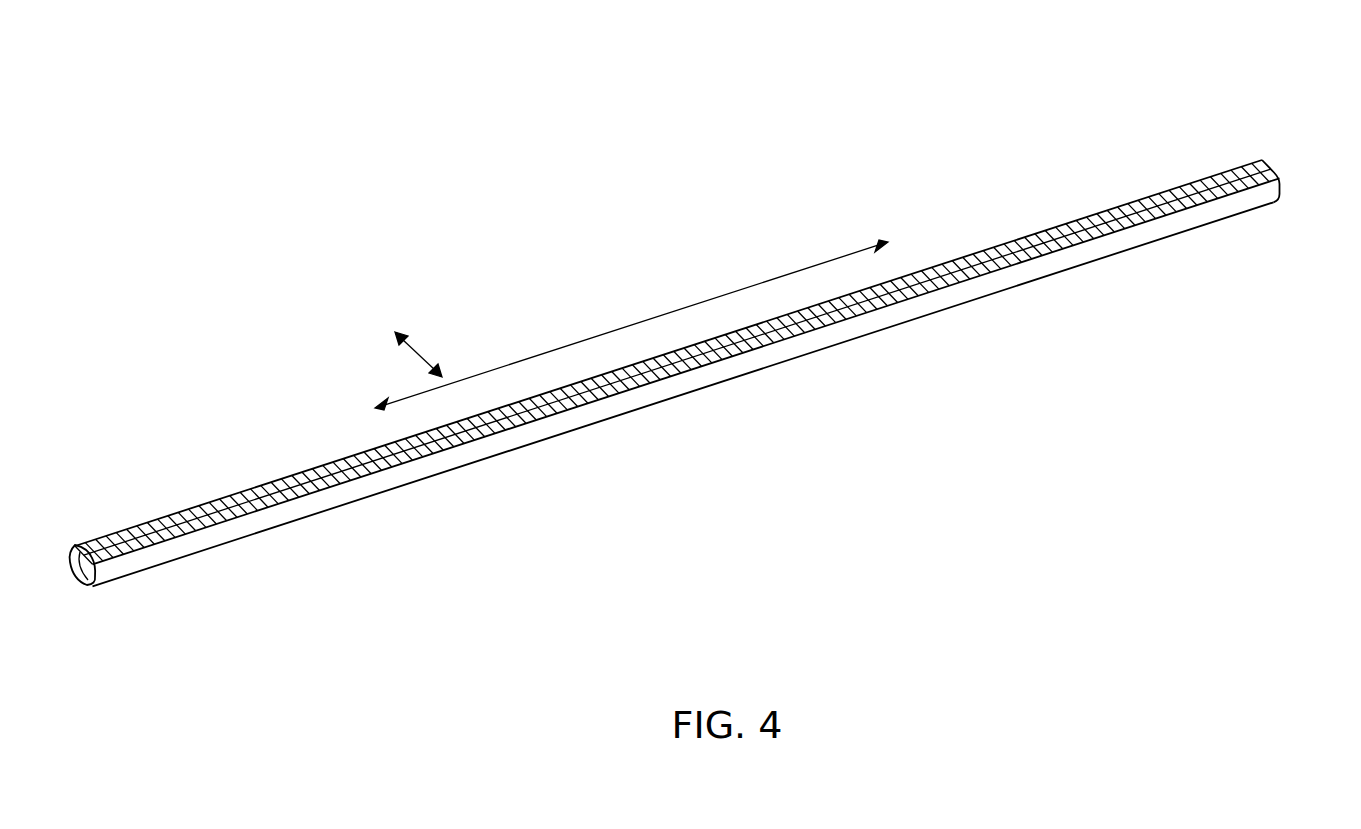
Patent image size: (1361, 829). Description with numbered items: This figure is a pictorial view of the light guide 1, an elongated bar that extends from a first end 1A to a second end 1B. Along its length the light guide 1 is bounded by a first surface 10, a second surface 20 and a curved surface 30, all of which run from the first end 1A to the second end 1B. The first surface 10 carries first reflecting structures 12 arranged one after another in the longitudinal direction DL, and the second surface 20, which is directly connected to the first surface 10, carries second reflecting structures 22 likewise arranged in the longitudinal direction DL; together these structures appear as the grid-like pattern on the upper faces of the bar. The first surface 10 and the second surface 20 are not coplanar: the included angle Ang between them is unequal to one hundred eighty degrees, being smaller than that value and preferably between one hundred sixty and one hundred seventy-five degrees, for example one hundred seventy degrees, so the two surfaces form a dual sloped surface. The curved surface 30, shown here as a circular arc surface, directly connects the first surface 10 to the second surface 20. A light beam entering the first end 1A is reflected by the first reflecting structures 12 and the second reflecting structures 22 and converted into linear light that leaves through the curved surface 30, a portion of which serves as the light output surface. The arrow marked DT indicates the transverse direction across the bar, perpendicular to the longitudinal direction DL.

The light guide 1 is at (708, 400).
The first surface 10 is at (117, 548).
The first reflecting structures 12 is at (251, 500).
The second surface 20 is at (108, 540).
The second reflecting structures 22 is at (249, 495).
The curved surface 30 is at (381, 485).
The first end 1A is at (93, 583).
The second end 1B is at (1278, 186).
The included angle Ang is at (80, 587).
The longitudinal direction DL is at (655, 317).
The transverse direction DT is at (407, 336).